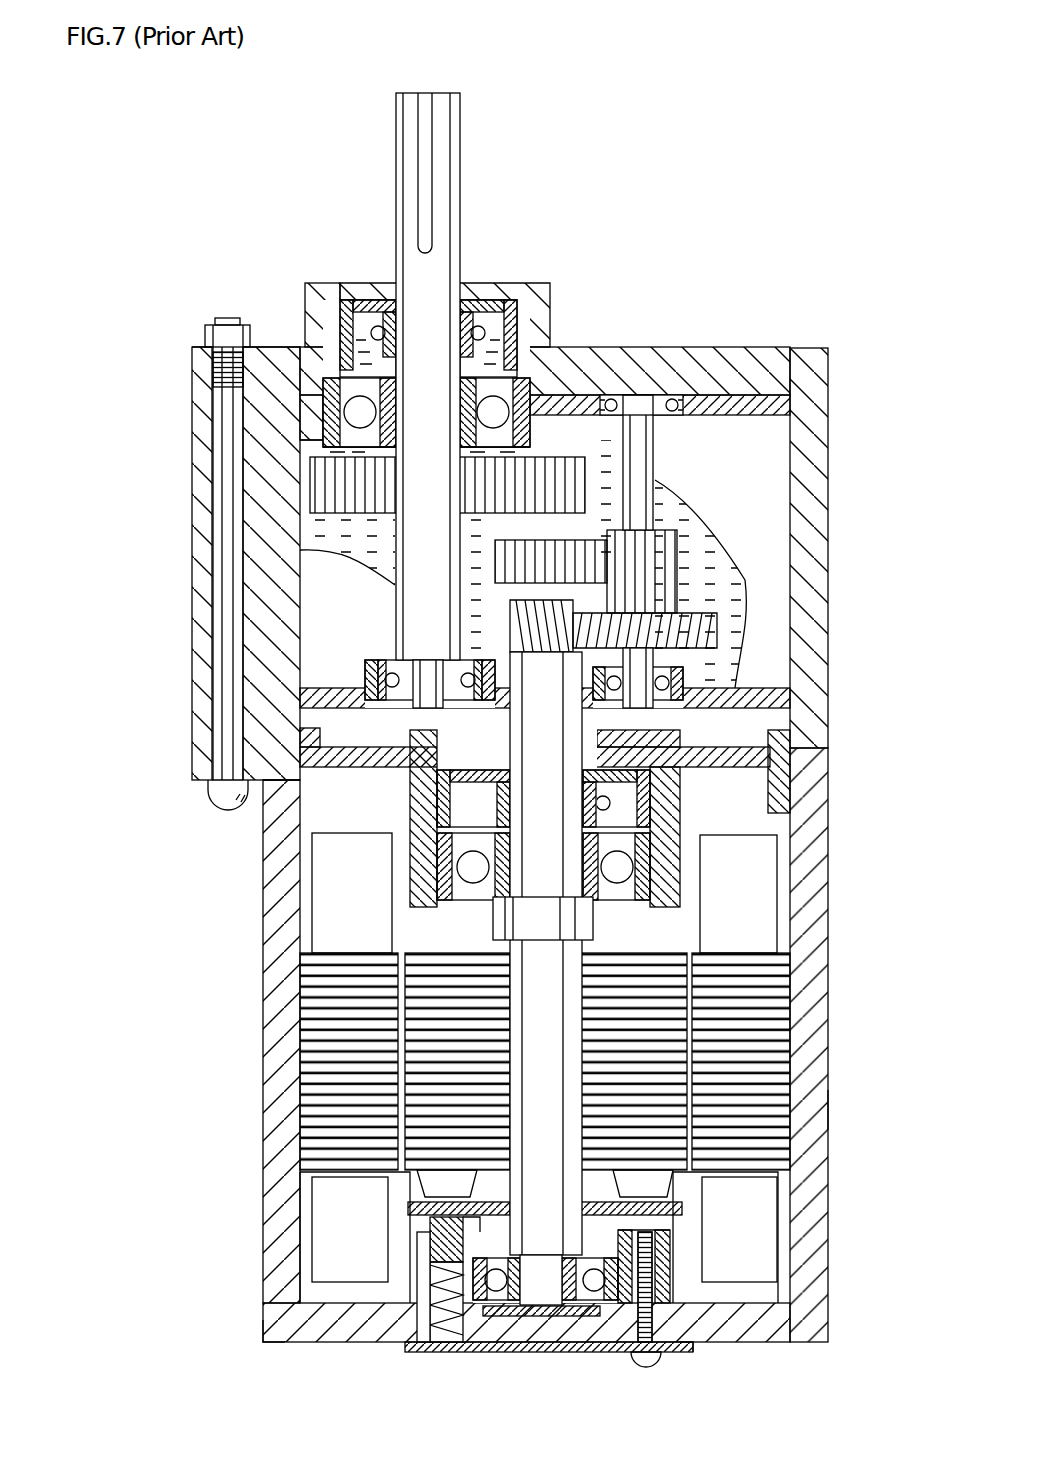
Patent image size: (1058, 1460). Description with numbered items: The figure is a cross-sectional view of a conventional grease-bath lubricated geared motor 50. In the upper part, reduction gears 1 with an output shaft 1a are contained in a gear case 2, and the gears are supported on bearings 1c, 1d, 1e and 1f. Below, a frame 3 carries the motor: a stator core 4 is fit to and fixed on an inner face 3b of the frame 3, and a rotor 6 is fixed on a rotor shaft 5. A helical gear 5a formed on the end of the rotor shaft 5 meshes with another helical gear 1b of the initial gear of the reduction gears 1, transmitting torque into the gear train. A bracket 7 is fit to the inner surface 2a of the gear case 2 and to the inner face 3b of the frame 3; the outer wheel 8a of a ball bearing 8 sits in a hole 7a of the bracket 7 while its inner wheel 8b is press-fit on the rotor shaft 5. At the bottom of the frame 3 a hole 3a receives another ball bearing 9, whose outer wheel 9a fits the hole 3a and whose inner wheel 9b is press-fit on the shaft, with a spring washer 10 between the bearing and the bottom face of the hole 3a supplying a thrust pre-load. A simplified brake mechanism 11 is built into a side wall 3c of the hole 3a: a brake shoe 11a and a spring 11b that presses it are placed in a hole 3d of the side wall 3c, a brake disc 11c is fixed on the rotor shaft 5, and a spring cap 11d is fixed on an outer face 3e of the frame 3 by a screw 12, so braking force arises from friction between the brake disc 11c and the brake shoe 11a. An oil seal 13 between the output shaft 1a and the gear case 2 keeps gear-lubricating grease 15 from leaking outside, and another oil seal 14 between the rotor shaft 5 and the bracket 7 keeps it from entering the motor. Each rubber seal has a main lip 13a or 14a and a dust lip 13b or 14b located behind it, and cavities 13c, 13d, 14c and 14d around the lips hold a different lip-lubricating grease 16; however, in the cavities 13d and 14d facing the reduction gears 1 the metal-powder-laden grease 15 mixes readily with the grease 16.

The reduction gears 1 is at (648, 548).
The output shaft 1a is at (412, 258).
The helical gear 1b is at (700, 640).
The bearing 1c is at (700, 672).
The bearing 1d is at (673, 405).
The bearing 1e is at (395, 640).
The bearing 1f is at (330, 415).
The gear case 2 is at (765, 360).
The inner surface 2a is at (780, 710).
The frame 3 is at (800, 1005).
The hole 3a is at (650, 1225).
The inner face 3b is at (795, 890).
The side wall 3c is at (440, 1280).
The hole 3d is at (455, 1352).
The outer face 3e is at (262, 1340).
The stator core 4 is at (765, 1070).
The rotor shaft 5 is at (520, 920).
The helical gear 5a is at (570, 600).
The rotor 6 is at (410, 990).
The bracket 7 is at (300, 745).
The hole 7a is at (690, 870).
The ball bearing 8 is at (630, 905).
The outer wheel 8a is at (450, 850).
The inner wheel 8b is at (460, 895).
The ball bearing 9 is at (645, 1270).
The outer wheel 9a is at (480, 1342).
The inner wheel 9b is at (530, 1342).
The spring washer 10 is at (600, 1342).
The simplified brake mechanism 11 is at (410, 1233).
The brake shoe 11a is at (425, 1245).
The spring 11b is at (428, 1342).
The brake disc 11c is at (660, 1205).
The spring cap 11d is at (693, 1350).
The screw 12 is at (648, 1362).
The oil seal 13 is at (540, 285).
The main lip 13a is at (520, 333).
The dust lip 13b is at (468, 300).
The cavity 13c is at (392, 345).
The cavity 13d is at (342, 335).
The oil seal 14 is at (660, 860).
The main lip 14a is at (690, 780).
The dust lip 14b is at (600, 830).
The cavity 14c is at (440, 830).
The cavity 14d is at (405, 705).
The grease 15 is at (300, 540).
The grease 16 is at (487, 302).
The motor 50 is at (830, 1110).